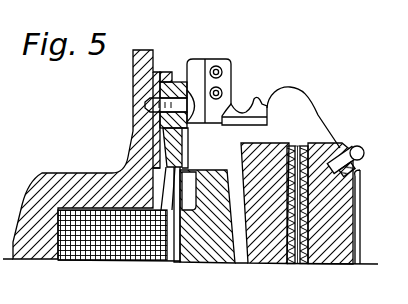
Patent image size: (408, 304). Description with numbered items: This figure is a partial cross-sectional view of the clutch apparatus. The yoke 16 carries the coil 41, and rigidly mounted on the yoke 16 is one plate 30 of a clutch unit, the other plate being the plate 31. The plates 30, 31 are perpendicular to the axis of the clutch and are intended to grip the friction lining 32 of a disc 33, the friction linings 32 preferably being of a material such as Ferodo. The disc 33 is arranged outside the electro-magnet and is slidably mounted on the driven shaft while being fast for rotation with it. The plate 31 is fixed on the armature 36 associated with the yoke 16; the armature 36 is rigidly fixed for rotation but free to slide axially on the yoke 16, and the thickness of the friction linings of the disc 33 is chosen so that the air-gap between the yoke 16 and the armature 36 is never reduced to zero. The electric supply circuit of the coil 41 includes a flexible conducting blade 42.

The yoke 16 is at (52, 178).
The coil 41 is at (116, 255).
The armature 36 is at (208, 254).
The plate 30 is at (266, 251).
The friction lining 32 is at (293, 264).
The disc 33 is at (298, 265).
The plate 31 is at (356, 253).
The flexible conducting blade 42 is at (308, 97).